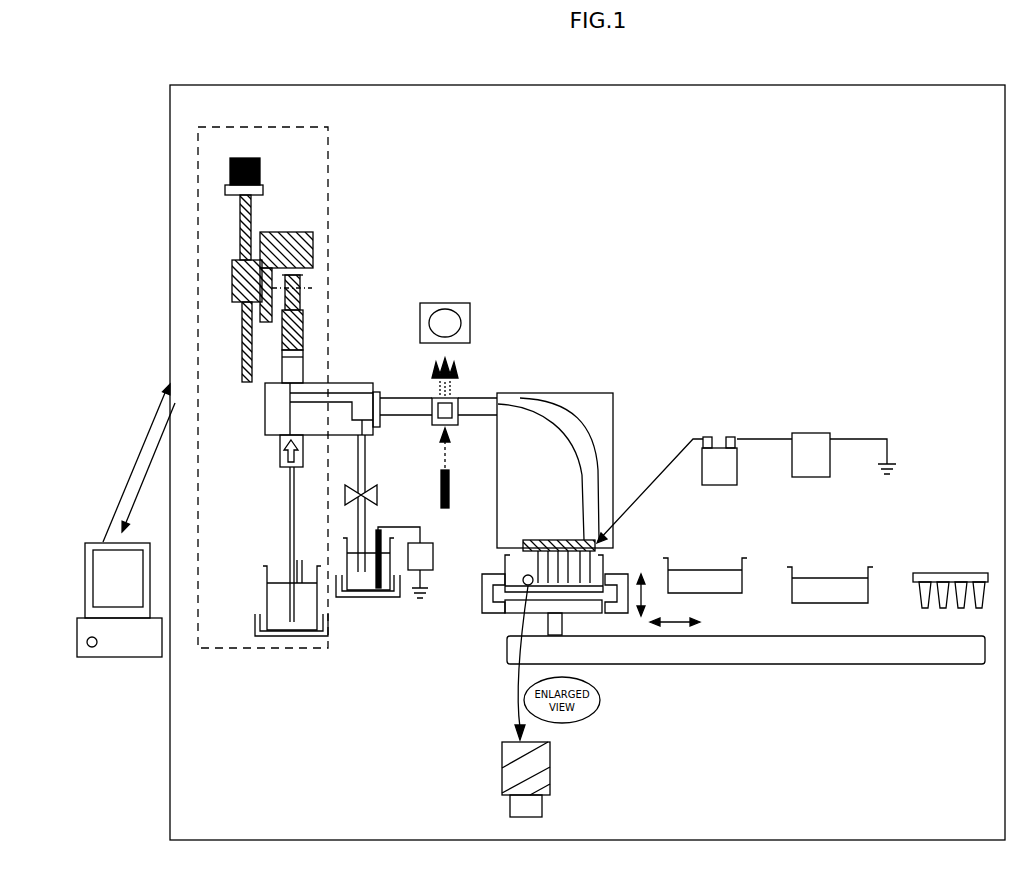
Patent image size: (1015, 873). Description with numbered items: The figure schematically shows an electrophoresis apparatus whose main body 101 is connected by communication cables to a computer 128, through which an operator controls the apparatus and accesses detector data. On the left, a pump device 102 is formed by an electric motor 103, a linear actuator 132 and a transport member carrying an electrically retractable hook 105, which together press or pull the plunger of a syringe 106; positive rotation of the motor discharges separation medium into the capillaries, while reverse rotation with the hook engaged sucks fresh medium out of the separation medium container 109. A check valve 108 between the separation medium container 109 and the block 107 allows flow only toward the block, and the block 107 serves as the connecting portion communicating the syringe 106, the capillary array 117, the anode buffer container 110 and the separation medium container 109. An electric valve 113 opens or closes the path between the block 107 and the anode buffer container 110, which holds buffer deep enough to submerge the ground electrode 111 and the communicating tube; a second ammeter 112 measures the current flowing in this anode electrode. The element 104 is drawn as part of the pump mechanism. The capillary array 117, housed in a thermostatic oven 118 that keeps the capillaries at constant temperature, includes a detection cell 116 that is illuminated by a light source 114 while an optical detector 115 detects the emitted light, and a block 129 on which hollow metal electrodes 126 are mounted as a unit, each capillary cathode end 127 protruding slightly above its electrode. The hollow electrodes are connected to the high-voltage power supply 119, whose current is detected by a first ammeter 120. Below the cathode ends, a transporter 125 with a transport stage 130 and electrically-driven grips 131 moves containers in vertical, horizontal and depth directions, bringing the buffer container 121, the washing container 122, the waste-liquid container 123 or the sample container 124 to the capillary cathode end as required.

The main body 101 is at (563, 86).
The pump device 102 is at (328, 143).
The electric motor 103 is at (261, 172).
The support block 104 is at (313, 238).
The electrically retractable hook 105 is at (305, 293).
The syringe 106 is at (303, 350).
The block 107 is at (320, 391).
The check valve 108 is at (282, 460).
The separation medium container 109 is at (275, 630).
The anode buffer container 110 is at (353, 594).
The electrode (GND) 111 is at (382, 591).
The second ammeter 112 is at (418, 615).
The electric valve 113 is at (363, 490).
The light source 114 is at (448, 472).
The optical detector 115 is at (445, 302).
The detection cell 116 is at (458, 397).
The capillary array 117 is at (510, 410).
The thermostatic oven 118 is at (593, 538).
The high-voltage power supply 119 is at (713, 437).
The first ammeter 120 is at (800, 433).
The buffer container 121 is at (598, 585).
The washing container 122 is at (678, 577).
The waste-liquid container 123 is at (803, 582).
The sample container 124 is at (923, 573).
The transporter 125 is at (741, 662).
The hollow metal electrode 126 is at (550, 766).
The capillary cathode end 127 is at (542, 809).
The computer 128 is at (127, 650).
The block 129 is at (557, 542).
The transport stage 130 is at (580, 608).
The electrically-driven grips 131 is at (620, 576).
The linear actuator 132 is at (232, 282).